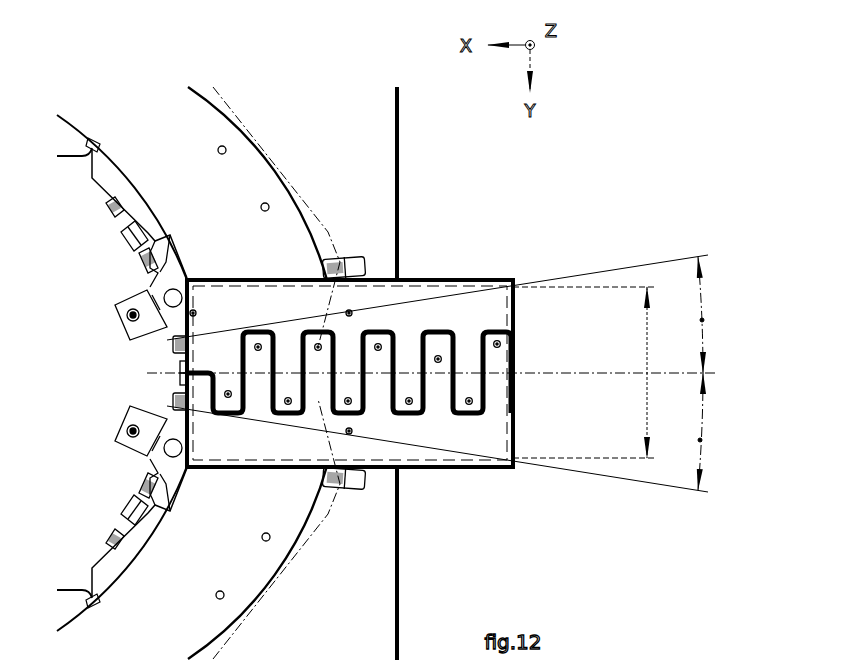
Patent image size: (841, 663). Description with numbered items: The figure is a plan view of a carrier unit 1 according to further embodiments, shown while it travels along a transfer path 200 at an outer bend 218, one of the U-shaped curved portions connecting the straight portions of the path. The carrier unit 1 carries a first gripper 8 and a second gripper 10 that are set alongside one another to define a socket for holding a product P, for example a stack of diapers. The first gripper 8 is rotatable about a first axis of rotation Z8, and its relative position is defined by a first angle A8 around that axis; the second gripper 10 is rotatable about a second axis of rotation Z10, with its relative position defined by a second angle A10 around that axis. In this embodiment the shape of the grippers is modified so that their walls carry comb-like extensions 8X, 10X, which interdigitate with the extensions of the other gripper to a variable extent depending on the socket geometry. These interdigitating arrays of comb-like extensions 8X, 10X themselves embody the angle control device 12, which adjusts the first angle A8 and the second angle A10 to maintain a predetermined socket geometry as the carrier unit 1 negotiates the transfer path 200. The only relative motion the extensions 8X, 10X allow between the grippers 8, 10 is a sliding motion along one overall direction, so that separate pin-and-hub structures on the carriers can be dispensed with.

The carrier unit 1 is at (398, 232).
The first gripper 8 is at (418, 450).
The second gripper 10 is at (430, 290).
The angle control device 12 is at (390, 313).
The transfer path 200 is at (198, 160).
The outer bend 218 is at (167, 165).
The product P is at (150, 291).
The comb-like extensions of the first gripper 8X is at (170, 335).
The comb-like extensions of the second gripper 10X is at (228, 394).
The second axis of rotation Z10 is at (349, 313).
The first axis of rotation Z8 is at (349, 431).
The second angle A10 is at (705, 320).
The first angle A8 is at (703, 440).